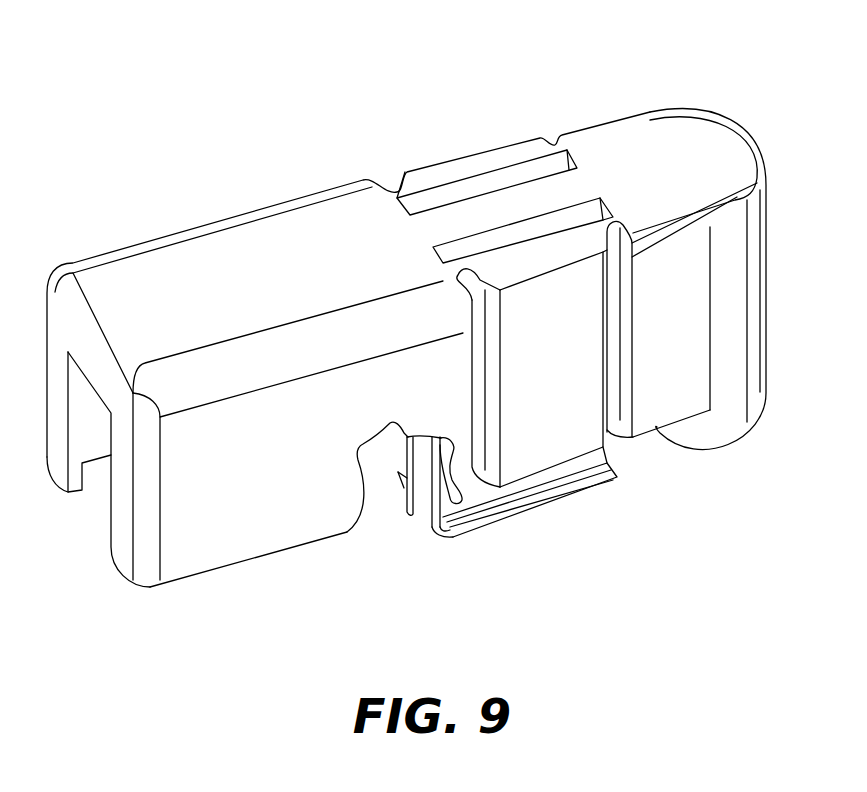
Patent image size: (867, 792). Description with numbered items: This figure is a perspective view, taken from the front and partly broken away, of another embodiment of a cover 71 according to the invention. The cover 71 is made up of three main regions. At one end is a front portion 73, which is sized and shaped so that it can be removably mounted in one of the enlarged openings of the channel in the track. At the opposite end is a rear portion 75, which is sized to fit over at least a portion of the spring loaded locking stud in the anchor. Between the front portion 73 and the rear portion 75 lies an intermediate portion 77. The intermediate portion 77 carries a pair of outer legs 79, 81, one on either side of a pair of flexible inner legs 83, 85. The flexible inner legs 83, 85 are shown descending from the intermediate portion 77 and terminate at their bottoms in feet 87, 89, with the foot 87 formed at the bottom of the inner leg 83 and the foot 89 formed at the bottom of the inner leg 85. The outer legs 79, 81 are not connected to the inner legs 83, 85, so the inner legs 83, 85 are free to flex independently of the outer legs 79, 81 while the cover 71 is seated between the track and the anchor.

The cover 71 is at (239, 122).
The front portion 73 is at (668, 137).
The rear portion 75 is at (163, 268).
The intermediate portion 77 is at (597, 503).
The outer leg 79 is at (452, 167).
The outer leg 81 is at (527, 257).
The flexible inner leg 83 is at (400, 455).
The flexible inner leg 85 is at (427, 500).
The foot 87 is at (403, 493).
The foot 89 is at (443, 530).